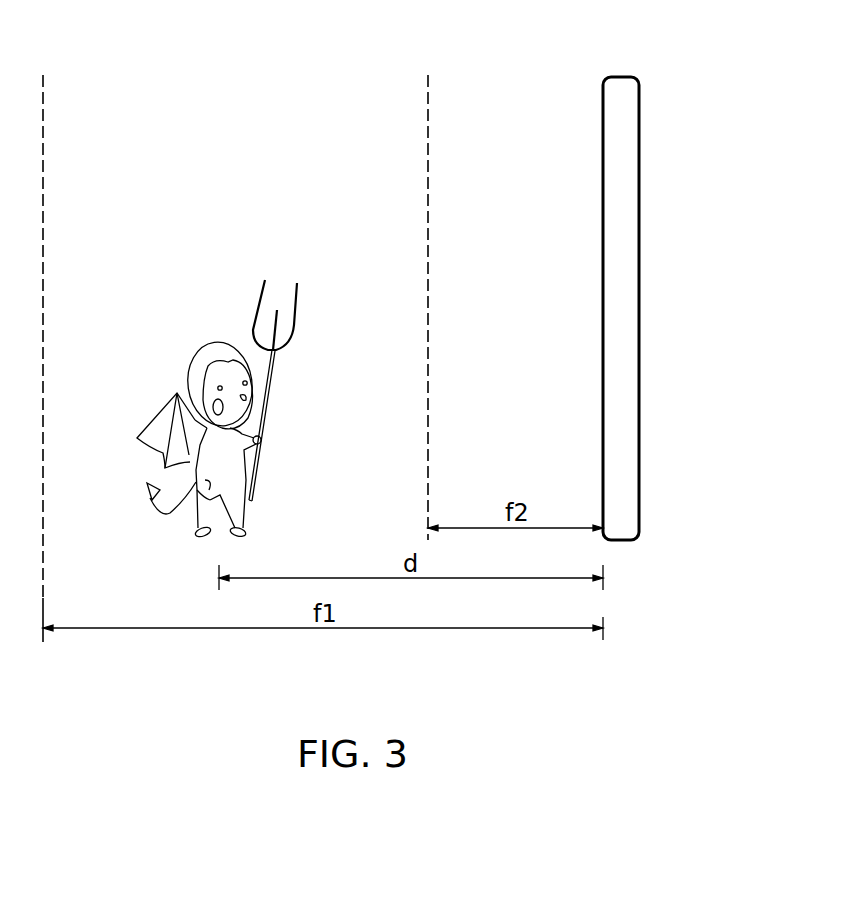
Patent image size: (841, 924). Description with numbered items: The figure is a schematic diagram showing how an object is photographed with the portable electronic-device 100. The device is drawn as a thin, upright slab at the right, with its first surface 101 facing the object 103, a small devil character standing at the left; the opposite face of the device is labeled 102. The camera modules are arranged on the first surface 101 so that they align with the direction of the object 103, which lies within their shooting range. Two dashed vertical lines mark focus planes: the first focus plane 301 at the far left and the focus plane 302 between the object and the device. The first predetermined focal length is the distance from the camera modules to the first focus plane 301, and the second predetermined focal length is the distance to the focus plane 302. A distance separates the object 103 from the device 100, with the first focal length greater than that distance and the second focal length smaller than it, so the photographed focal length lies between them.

The portable electronic-device 100 is at (620, 75).
The first surface 101 is at (603, 197).
The rear surface of display 102 is at (641, 197).
The object 103 is at (215, 342).
The first focus plane 301 is at (45, 197).
The first focus plane 302 is at (427, 197).